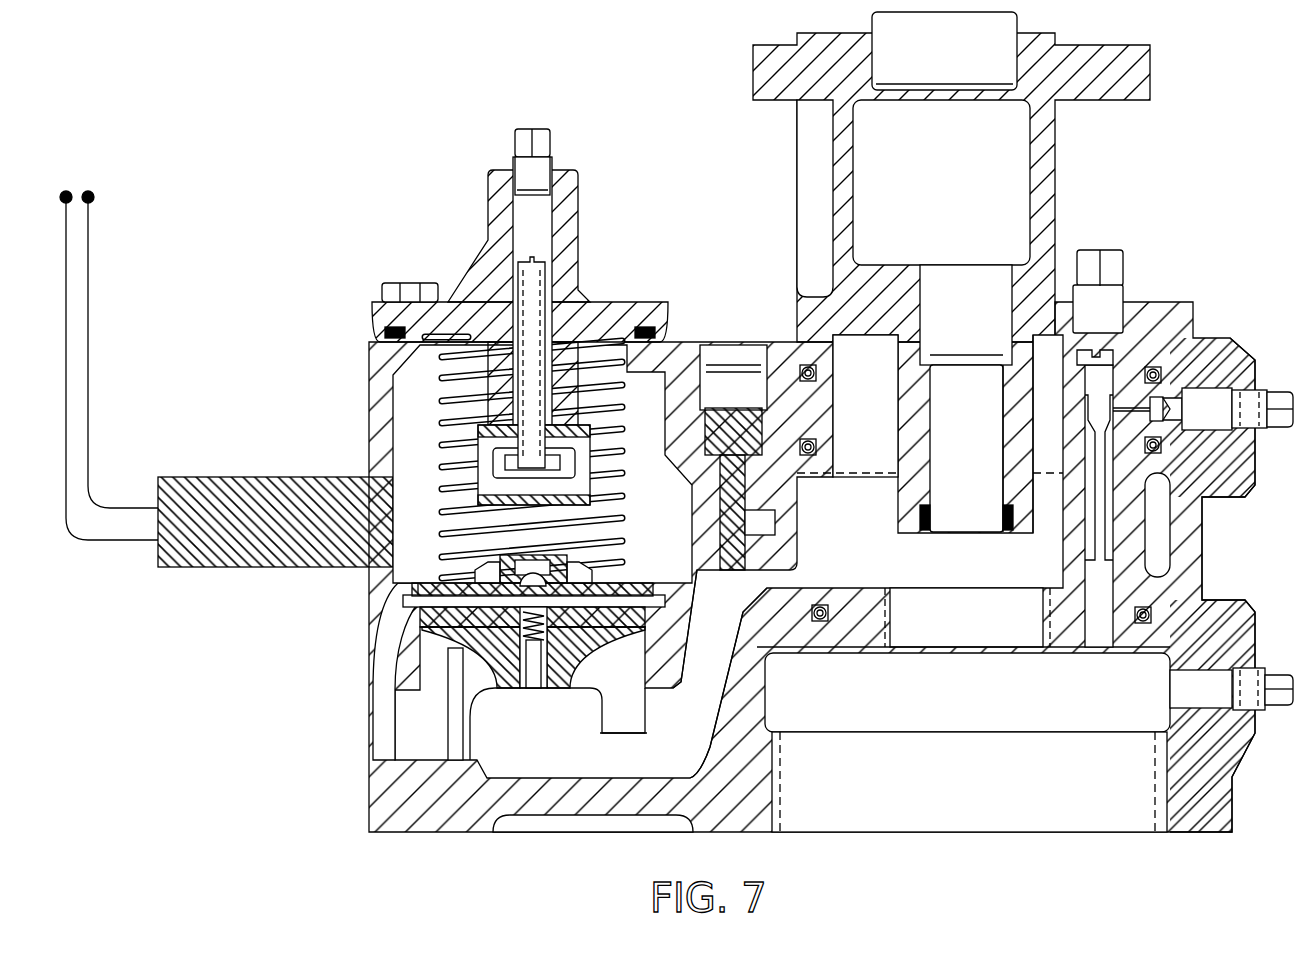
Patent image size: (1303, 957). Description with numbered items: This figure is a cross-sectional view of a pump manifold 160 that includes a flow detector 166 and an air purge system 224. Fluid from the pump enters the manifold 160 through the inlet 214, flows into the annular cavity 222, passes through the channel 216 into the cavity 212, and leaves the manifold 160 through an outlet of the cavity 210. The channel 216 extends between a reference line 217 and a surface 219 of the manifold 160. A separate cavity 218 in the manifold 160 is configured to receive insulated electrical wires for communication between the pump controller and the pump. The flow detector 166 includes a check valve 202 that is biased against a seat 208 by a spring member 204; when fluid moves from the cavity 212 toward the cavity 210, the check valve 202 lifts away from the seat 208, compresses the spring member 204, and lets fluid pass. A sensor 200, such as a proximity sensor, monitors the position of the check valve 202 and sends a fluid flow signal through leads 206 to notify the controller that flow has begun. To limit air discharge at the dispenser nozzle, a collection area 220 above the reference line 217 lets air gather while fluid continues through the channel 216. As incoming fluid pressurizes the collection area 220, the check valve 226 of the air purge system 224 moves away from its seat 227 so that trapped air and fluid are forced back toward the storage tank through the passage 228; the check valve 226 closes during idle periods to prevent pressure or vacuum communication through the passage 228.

The manifold 160 is at (486, 92).
The flow detector 166 is at (338, 582).
The sensor 200 is at (215, 476).
The check valve 202 is at (507, 678).
The spring member 204 is at (600, 348).
The leads 206 is at (112, 233).
The seat 208 is at (652, 620).
The cavity 210 is at (428, 385).
The cavity 212 is at (668, 720).
The inlet 214 is at (948, 656).
The channel 216 is at (812, 572).
The reference line 217 is at (855, 474).
The cavity 218 is at (960, 252).
The surface 219 is at (855, 583).
The collection area 220 is at (862, 370).
The annular cavity 222 is at (1020, 560).
The air purge system 224 is at (1213, 245).
The check valve 226 is at (1115, 352).
The seat 227 is at (1072, 352).
The passage 228 is at (1100, 630).